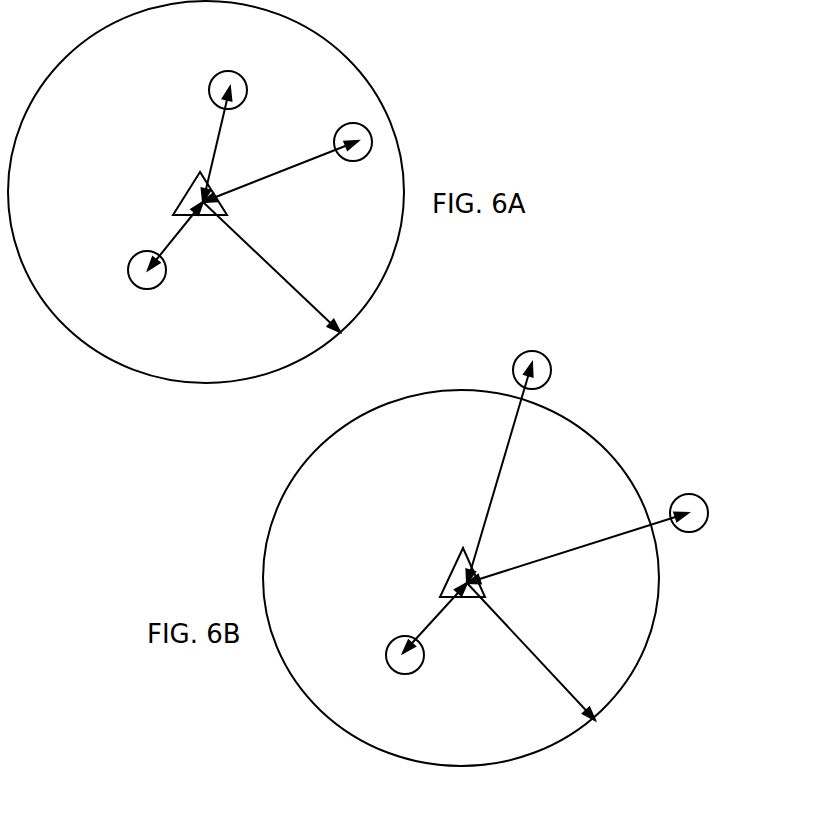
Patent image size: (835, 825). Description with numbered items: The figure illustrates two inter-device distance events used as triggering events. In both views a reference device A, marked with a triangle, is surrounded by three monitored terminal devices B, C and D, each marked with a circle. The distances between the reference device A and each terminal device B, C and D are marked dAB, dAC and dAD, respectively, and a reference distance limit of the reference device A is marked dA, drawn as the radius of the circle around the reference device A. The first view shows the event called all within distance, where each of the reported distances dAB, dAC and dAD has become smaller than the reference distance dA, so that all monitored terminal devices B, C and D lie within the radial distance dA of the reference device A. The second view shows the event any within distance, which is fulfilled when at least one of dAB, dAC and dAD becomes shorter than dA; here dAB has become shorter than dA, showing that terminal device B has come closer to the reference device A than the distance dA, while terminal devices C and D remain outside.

In FIG. 6A, the reference device A is at (197, 193).
In FIG. 6B, the reference device A is at (457, 570).
In FIG. 6A, the terminal device B is at (139, 279).
In FIG. 6B, the terminal device B is at (398, 667).
In FIG. 6A, the terminal device C is at (222, 78).
In FIG. 6B, the terminal device C is at (522, 359).
In FIG. 6A, the terminal device D is at (353, 125).
In FIG. 6B, the terminal device D is at (689, 499).
In FIG. 6A, the reference distance limit dA is at (271, 267).
In FIG. 6B, the reference distance limit dA is at (531, 651).
In FIG. 6A, the distance between reference device A and terminal device B dAB is at (162, 236).
In FIG. 6B, the distance between reference device A and terminal device B dAB is at (424, 618).
In FIG. 6A, the distance between reference device A and terminal device C dAC is at (195, 144).
In FIG. 6B, the distance between reference device A and terminal device C dAC is at (486, 473).
In FIG. 6A, the distance between reference device A and terminal device D dAD is at (280, 168).
In FIG. 6B, the distance between reference device A and terminal device D dAD is at (577, 548).